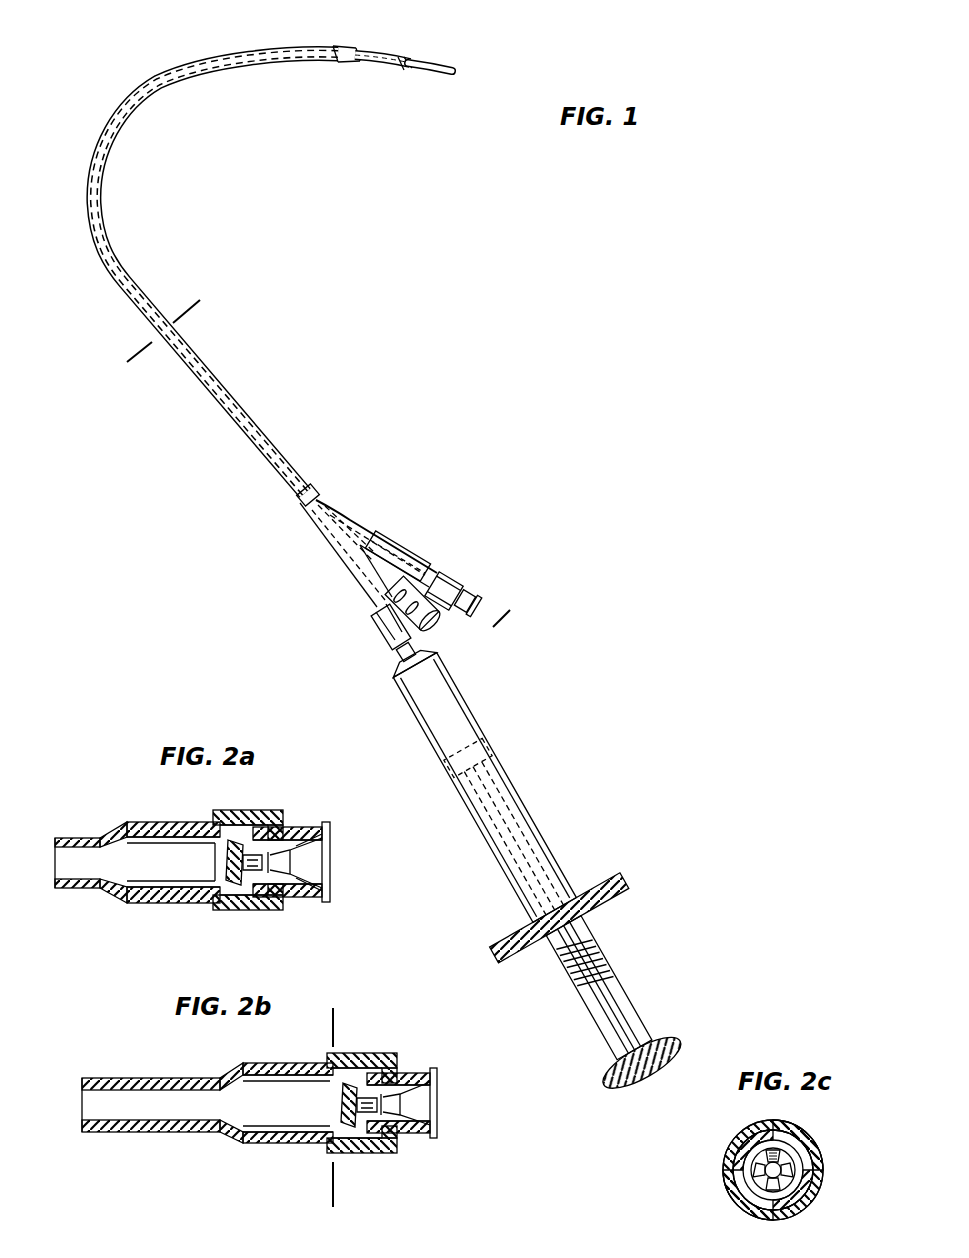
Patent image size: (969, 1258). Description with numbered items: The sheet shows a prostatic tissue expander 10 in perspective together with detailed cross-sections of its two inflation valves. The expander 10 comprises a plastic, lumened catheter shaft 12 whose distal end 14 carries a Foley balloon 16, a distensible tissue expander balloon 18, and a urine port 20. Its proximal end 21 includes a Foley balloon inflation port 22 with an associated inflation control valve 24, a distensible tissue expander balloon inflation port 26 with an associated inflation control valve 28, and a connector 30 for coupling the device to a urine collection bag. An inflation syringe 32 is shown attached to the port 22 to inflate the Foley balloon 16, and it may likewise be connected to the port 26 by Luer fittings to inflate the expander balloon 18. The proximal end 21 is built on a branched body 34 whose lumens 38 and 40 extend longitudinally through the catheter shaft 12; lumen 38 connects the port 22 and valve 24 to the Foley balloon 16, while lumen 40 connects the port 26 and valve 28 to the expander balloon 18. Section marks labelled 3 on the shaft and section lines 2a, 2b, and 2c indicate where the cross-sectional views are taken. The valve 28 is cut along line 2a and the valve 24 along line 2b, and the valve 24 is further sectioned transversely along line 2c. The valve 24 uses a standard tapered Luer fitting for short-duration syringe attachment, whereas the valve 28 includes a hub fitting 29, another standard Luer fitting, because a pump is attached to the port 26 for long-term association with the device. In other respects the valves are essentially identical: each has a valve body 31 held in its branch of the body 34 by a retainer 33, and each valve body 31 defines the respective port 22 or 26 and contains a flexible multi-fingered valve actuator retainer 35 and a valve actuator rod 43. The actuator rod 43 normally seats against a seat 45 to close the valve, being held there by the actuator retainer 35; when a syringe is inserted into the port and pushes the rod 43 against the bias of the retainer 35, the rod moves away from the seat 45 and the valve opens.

In FIG. 1, the prostatic tissue expander 10 is at (557, 343).
In FIG. 1, the catheter shaft 12 is at (123, 268).
In FIG. 1, the distal end 14 is at (354, 72).
In FIG. 1, the Foley balloon 16 is at (378, 47).
In FIG. 1, the distensible tissue expander balloon 18 is at (273, 47).
In FIG. 1, the urine port 20 is at (450, 62).
In FIG. 1, the proximal end 21 is at (485, 543).
In FIG. 1, the Foley balloon inflation port 22 is at (388, 660).
In FIG. 2b, the Foley balloon inflation port 22 is at (450, 1088).
In FIG. 1, the inflation control valve 24 is at (390, 627).
In FIG. 1, the distensible tissue expander balloon inflation port 26 is at (478, 622).
In FIG. 2a, the distensible tissue expander balloon inflation port 26 is at (340, 849).
In FIG. 1, the inflation control valve 28 is at (458, 583).
In FIG. 2a, the inflation control valve 28 is at (107, 899).
In FIG. 1, the hub fitting 29 is at (470, 597).
In FIG. 2a, the hub fitting 29 is at (330, 833).
In FIG. 1, the connector 30 is at (440, 632).
In FIG. 2a, the valve body 31 is at (303, 897).
In FIG. 2b, the valve body 31 is at (417, 1135).
In FIG. 1, the inflation syringe 32 is at (541, 810).
In FIG. 2a, the retainer 33 is at (250, 812).
In FIG. 2b, the retainer 33 is at (387, 1055).
In FIG. 2c, the retainer 33 is at (822, 1184).
In FIG. 1, the branched body 34 is at (377, 560).
In FIG. 2a, the branched body 34 is at (184, 820).
In FIG. 2b, the branched body 34 is at (280, 1063).
In FIG. 2c, the branched body 34 is at (742, 1142).
In FIG. 2a, the valve actuator retainer 35 is at (220, 853).
In FIG. 2b, the valve actuator retainer 35 is at (337, 1095).
In FIG. 2c, the valve actuator retainer 35 is at (800, 1148).
In FIG. 2b, the lumen 38 is at (149, 1110).
In FIG. 2a, the lumen 40 is at (76, 868).
In FIG. 2a, the valve actuator rod 43 is at (303, 857).
In FIG. 2b, the valve actuator rod 43 is at (410, 1102).
In FIG. 2c, the valve actuator rod 43 is at (751, 1168).
In FIG. 2a, the seat 45 is at (243, 877).
In FIG. 2b, the seat 45 is at (392, 1082).
In FIG. 1, the section line 3 is at (190, 316).
In FIG. 1, the section line 2a is at (403, 553).
In FIG. 1, the section line 2b is at (352, 593).
In FIG. 2b, the section line 2c is at (331, 1027).